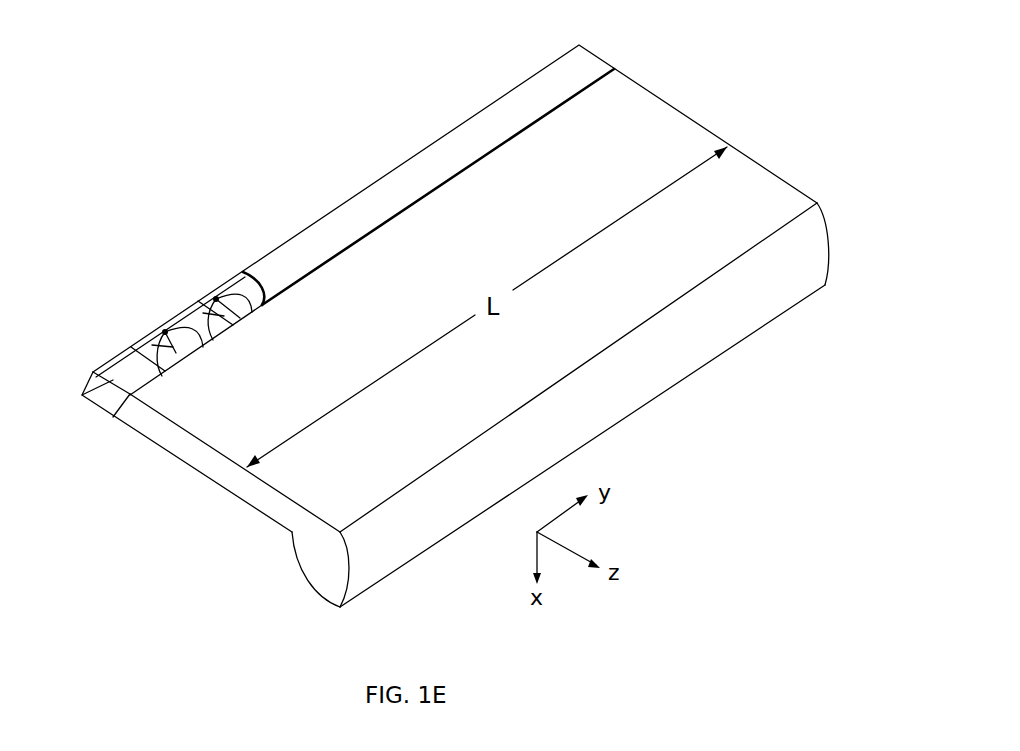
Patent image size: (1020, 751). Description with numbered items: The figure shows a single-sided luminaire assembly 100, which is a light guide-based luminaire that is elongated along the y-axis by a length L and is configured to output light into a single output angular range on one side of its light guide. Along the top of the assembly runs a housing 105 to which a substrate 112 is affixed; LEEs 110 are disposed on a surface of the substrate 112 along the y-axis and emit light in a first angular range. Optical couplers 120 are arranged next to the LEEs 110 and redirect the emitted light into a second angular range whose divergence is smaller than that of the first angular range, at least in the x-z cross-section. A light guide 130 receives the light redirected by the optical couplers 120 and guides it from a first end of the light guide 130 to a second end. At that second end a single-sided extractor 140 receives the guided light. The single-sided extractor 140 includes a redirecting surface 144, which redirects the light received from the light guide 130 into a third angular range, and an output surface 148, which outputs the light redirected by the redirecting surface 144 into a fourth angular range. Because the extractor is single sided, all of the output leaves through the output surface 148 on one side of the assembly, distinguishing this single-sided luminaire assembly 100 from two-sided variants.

The single-sided luminaire assembly 100 is at (126, 102).
The housing 105 is at (400, 190).
The LEEs 110 is at (165, 330).
The substrate 112 is at (238, 274).
The optical couplers 120 is at (160, 328).
The light guide 130 is at (238, 432).
The single-sided extractor 140 is at (315, 545).
The redirecting surface 144 is at (593, 415).
The output surface 148 is at (307, 587).